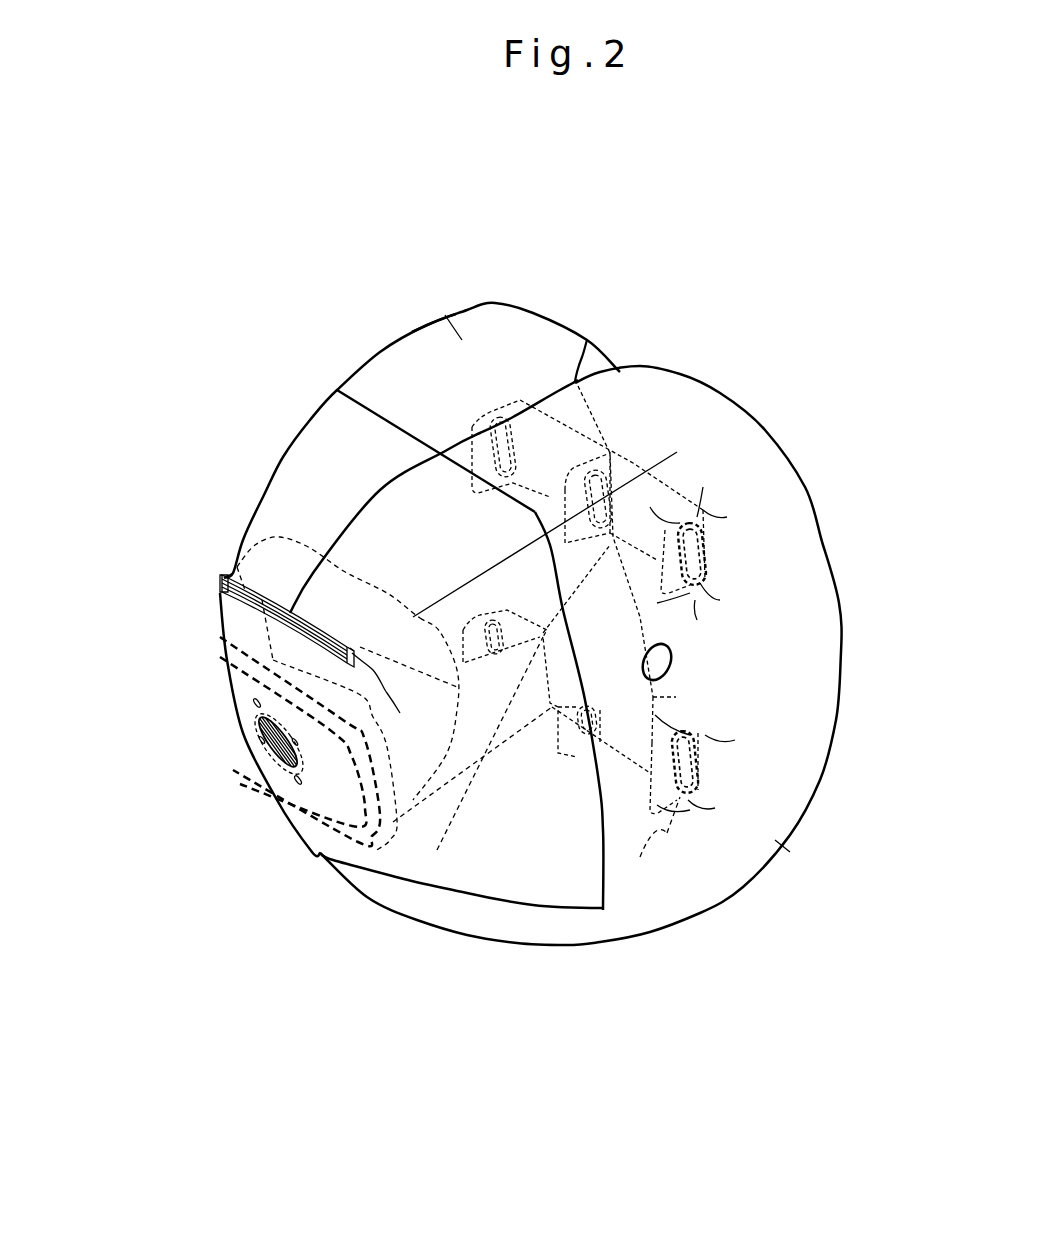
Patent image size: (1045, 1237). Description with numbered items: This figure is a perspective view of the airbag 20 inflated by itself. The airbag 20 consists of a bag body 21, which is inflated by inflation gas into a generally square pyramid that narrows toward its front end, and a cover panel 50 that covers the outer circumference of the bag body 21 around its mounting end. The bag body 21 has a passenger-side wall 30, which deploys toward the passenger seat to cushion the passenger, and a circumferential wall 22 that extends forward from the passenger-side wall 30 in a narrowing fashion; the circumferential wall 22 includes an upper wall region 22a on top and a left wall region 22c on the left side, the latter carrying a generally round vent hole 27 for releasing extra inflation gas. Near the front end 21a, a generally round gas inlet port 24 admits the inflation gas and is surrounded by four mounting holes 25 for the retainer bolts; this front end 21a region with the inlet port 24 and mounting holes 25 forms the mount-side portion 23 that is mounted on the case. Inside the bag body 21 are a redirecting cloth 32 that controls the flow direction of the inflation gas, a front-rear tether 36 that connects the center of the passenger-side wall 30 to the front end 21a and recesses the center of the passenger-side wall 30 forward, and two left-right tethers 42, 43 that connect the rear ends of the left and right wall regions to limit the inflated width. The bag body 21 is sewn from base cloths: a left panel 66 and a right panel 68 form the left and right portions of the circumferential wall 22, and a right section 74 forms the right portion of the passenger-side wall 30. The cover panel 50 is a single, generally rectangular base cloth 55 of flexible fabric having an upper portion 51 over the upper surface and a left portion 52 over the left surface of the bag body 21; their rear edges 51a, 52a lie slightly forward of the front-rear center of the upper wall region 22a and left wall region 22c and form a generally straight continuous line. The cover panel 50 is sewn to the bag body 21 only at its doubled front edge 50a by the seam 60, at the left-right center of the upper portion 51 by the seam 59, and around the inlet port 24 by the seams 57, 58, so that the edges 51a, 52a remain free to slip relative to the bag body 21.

The airbag 20 is at (722, 268).
The bag body 21 is at (528, 296).
The front end 21a is at (255, 567).
The circumferential wall 22 is at (372, 340).
The upper wall region 22a is at (420, 345).
The left wall region 22c is at (640, 857).
The mount-side portion 23 is at (427, 860).
The gas inlet port 24 is at (278, 755).
The mounting holes 25 is at (299, 780).
The vent hole 27 is at (665, 660).
The passenger-side wall 30 is at (746, 398).
The redirecting cloth 32 is at (388, 583).
The front-rear tether 36 is at (527, 752).
The left-right tether 42 is at (668, 475).
The left-right tether 43 is at (678, 695).
The cover panel 50 is at (283, 450).
The front edge 50a is at (225, 585).
The upper portion 51 is at (340, 417).
The edge of upper portion 51a is at (497, 473).
The left portion 52 is at (500, 877).
The edge of left portion 52a is at (607, 857).
The base cloth 55 is at (266, 500).
The seam 57 is at (253, 733).
The seam 58 is at (363, 848).
The seam 59 is at (381, 489).
The seam 60 is at (321, 620).
The left panel 66 is at (772, 833).
The right panel 68 is at (455, 327).
The right section 74 is at (598, 342).